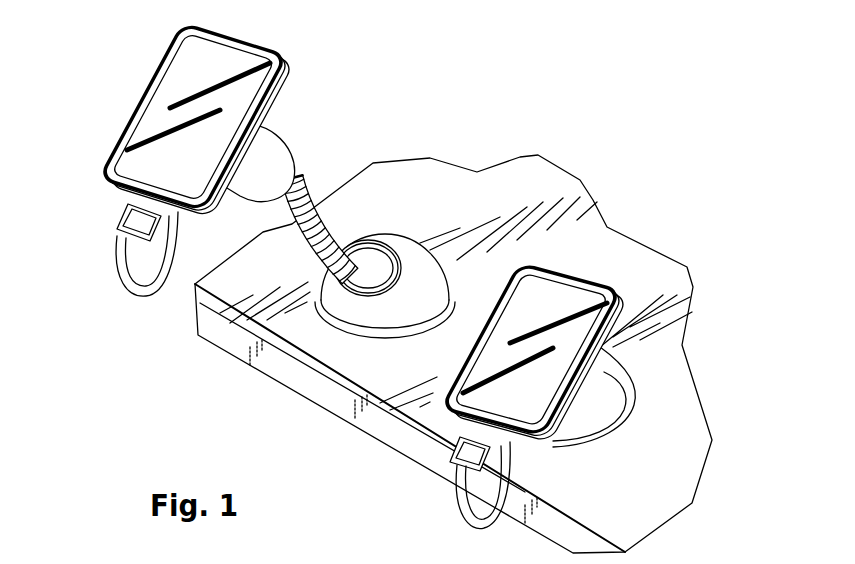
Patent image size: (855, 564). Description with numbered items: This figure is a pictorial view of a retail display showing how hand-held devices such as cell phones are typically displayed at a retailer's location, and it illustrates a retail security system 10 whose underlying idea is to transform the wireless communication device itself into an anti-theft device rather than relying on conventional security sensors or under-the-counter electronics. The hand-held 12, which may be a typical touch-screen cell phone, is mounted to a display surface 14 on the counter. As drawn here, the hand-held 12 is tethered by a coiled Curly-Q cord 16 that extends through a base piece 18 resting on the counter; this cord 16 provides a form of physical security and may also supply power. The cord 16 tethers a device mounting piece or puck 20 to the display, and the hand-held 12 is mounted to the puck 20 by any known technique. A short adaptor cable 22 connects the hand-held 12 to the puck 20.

The retail security system 10 is at (204, 111).
The hand-held 12 is at (292, 80).
The display surface 14 is at (640, 512).
The cord 16 is at (314, 187).
The base piece 18 is at (405, 233).
The puck 20 is at (274, 143).
The adaptor cable 22 is at (127, 293).